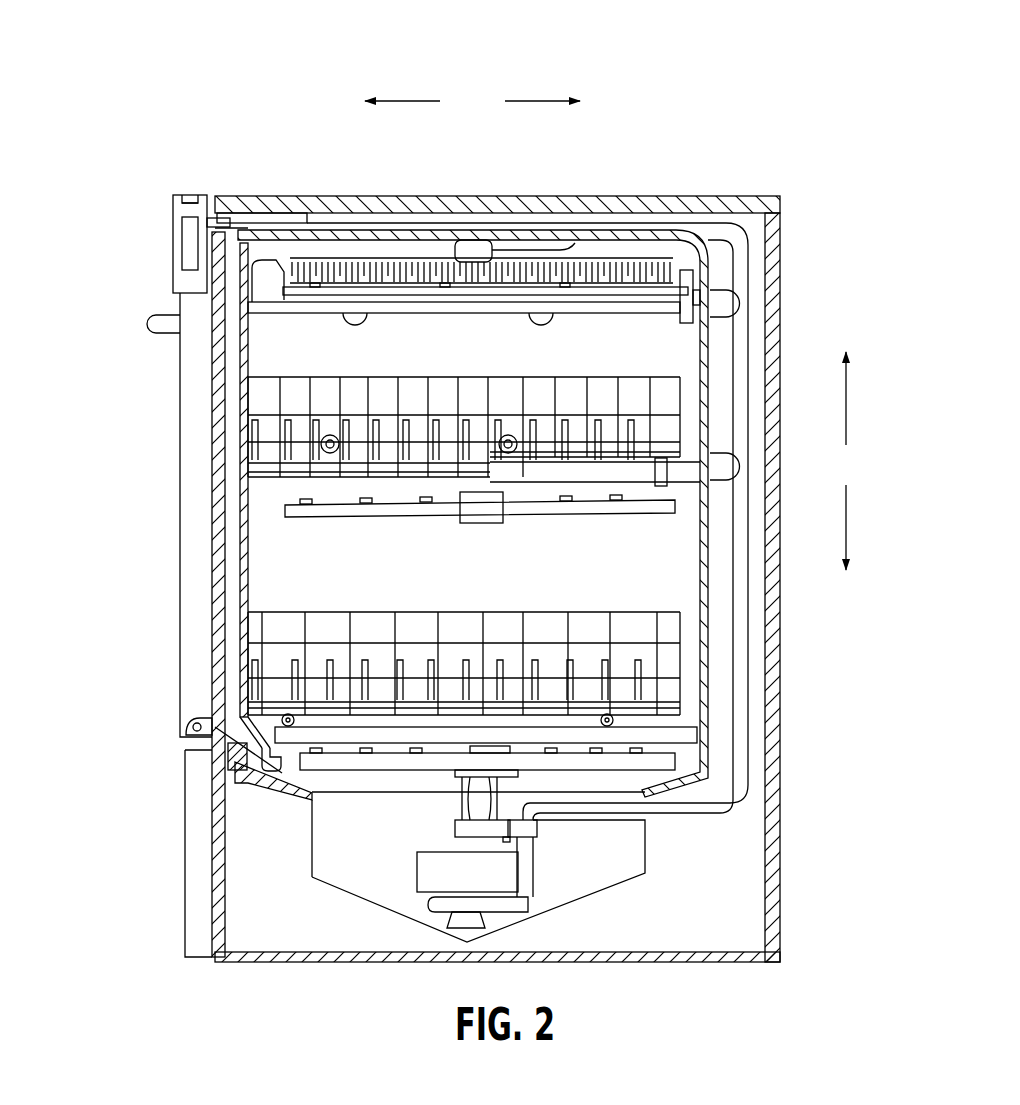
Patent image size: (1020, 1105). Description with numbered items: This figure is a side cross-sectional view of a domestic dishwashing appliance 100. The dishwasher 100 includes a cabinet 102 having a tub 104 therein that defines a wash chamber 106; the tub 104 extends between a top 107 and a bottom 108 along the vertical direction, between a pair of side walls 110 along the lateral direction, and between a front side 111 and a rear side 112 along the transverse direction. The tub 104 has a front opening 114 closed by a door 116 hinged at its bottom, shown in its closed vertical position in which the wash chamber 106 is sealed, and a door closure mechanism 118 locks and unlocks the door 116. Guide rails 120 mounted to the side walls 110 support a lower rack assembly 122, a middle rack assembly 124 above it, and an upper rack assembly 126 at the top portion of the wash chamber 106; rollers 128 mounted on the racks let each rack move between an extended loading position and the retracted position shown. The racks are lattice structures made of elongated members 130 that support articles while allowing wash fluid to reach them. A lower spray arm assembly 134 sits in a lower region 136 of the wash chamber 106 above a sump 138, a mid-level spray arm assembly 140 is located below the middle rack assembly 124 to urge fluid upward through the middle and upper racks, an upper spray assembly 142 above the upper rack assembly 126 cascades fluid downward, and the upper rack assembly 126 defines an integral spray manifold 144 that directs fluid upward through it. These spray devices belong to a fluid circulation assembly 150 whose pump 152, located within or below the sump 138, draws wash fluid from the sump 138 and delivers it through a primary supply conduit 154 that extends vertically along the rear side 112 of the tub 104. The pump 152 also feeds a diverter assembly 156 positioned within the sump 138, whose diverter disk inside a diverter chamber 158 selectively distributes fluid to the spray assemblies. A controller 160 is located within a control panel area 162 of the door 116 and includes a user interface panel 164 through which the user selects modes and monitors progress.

The dishwashing appliance 100 is at (677, 72).
The cabinet 102 is at (778, 238).
The tub 104 is at (382, 560).
The wash chamber 106 is at (287, 555).
The top 107 is at (380, 229).
The bottom 108 is at (735, 760).
The side walls 110 is at (437, 250).
The front side 111 is at (255, 256).
The rear side 112 is at (690, 342).
The front opening 114 is at (212, 240).
The door 116 is at (180, 618).
The door closure mechanism 118 is at (265, 213).
The guide rails 120 is at (320, 447).
The lower rack assembly 122 is at (600, 600).
The middle rack assembly 124 is at (277, 355).
The upper rack assembly 126 is at (413, 252).
The rollers 128 is at (348, 316).
The elongated members 130 is at (657, 418).
The lower spray arm assembly 134 is at (605, 748).
The lower region 136 is at (688, 722).
The sump 138 is at (312, 828).
The mid-level spray arm assembly 140 is at (515, 505).
The upper spray assembly 142 is at (503, 285).
The integral spray manifold 144 is at (612, 278).
The fluid circulation assembly 150 is at (402, 840).
The pump 152 is at (500, 868).
The primary supply conduit 154 is at (742, 625).
The diverter assembly 156 is at (450, 830).
The diverter chamber 158 is at (523, 830).
The controller 160 is at (175, 240).
The control panel area 162 is at (187, 186).
The user interface panel 164 is at (200, 190).